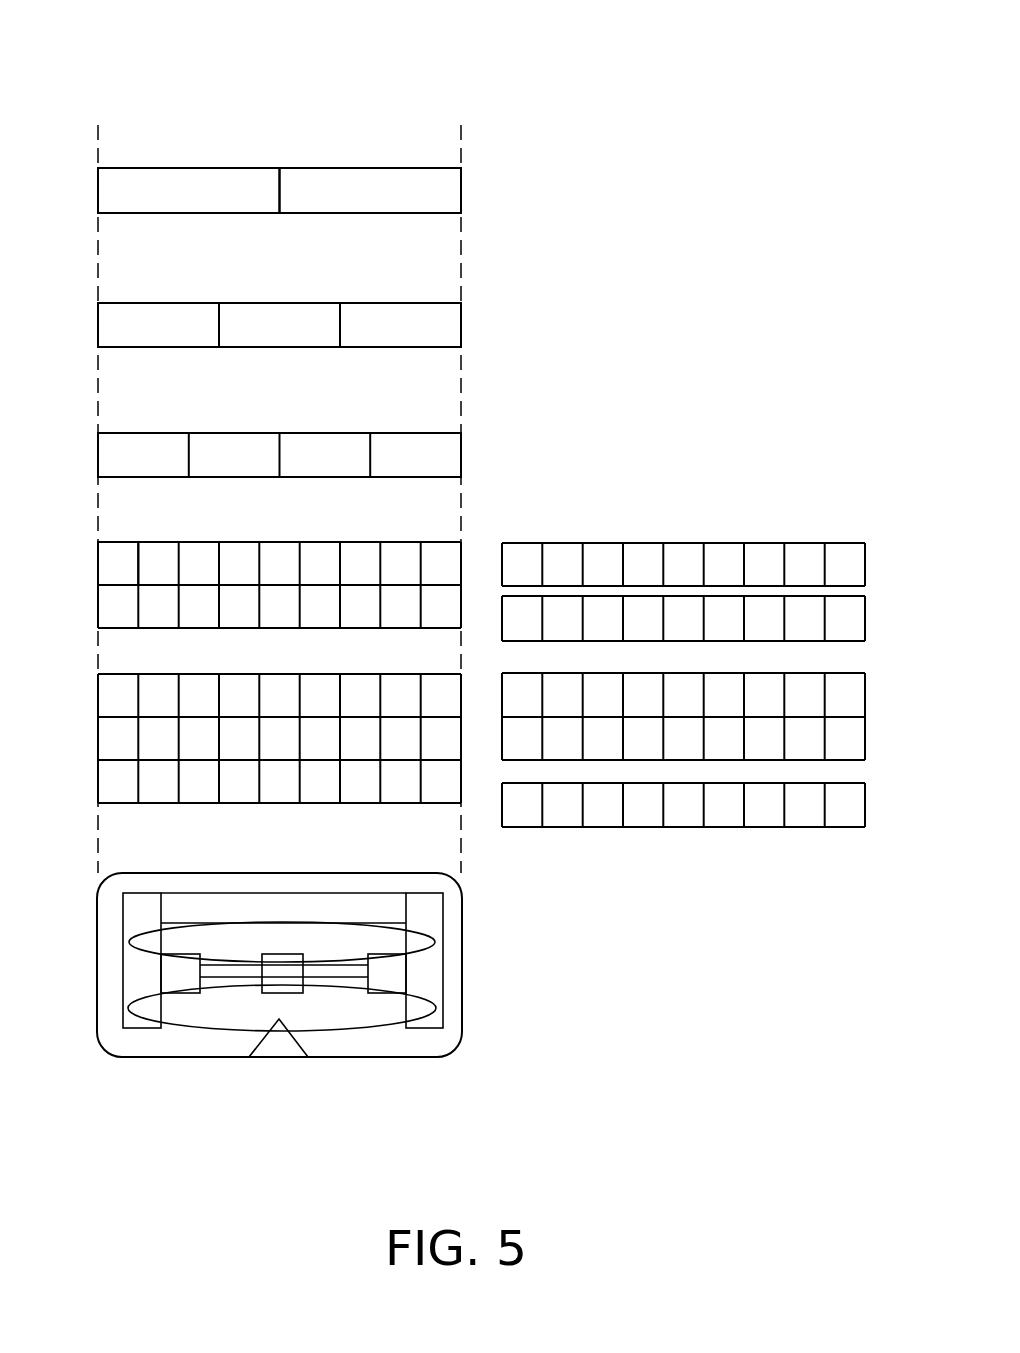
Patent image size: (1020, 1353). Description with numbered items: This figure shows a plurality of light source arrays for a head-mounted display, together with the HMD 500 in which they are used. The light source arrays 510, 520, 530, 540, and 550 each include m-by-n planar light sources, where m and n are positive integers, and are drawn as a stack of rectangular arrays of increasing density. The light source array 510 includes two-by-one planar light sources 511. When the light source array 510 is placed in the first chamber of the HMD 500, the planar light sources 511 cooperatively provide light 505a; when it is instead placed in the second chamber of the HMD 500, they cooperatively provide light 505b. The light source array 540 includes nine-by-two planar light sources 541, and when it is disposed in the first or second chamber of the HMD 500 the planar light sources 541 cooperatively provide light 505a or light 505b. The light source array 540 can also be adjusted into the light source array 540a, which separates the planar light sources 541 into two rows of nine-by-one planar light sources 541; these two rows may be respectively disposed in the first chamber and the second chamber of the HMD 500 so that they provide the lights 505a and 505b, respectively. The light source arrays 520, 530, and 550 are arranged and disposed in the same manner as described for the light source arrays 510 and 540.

The HMD 500 is at (341, 994).
The light 505a is at (418, 942).
The light 505b is at (425, 1006).
The light source array 510 is at (503, 198).
The planar light source 511 is at (211, 157).
The light source array 520 is at (503, 336).
The light source array 530 is at (511, 456).
The light source array 540 is at (498, 539).
The light source array 540a is at (837, 503).
The planar light source 541 is at (117, 567).
The light source array 550 is at (456, 824).